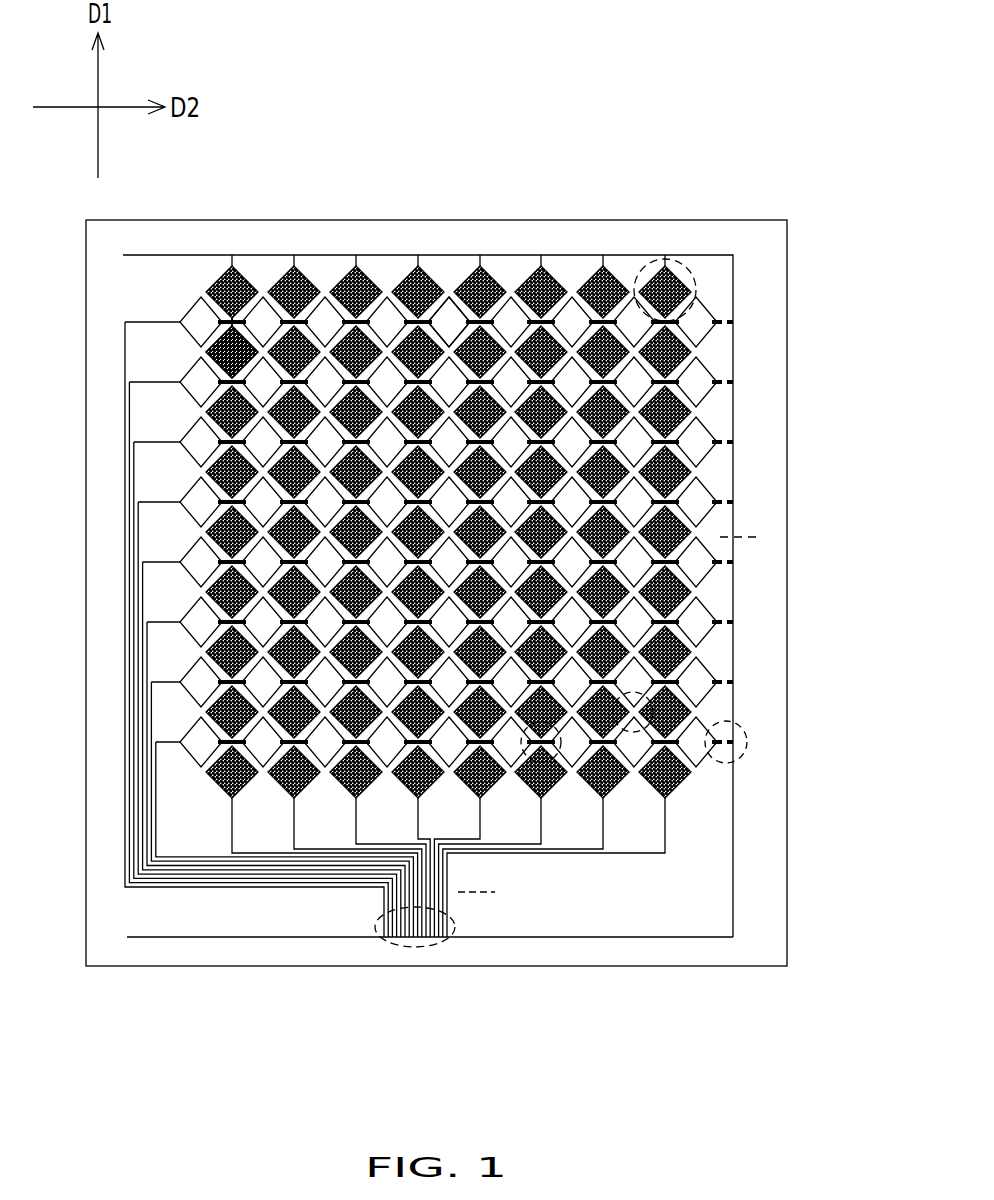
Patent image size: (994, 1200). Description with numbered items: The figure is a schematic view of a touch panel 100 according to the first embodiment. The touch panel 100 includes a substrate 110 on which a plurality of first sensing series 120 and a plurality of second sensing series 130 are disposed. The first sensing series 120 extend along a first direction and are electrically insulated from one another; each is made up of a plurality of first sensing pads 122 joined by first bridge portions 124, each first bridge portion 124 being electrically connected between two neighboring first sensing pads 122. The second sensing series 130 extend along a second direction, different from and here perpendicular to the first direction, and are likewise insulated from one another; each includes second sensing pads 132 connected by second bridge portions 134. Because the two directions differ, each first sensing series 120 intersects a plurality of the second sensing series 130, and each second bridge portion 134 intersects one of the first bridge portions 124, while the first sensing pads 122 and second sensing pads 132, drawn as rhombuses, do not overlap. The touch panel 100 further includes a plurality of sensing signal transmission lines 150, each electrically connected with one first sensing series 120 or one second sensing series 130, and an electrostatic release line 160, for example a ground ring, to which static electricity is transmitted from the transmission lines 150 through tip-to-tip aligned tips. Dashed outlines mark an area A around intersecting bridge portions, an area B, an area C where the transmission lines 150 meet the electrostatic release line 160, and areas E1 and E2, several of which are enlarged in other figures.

The touch panel 100 is at (473, 586).
The substrate 110 is at (777, 887).
The first sensing series 120 is at (446, 461).
The first sensing pad 122 is at (240, 350).
The first bridge portion 124 is at (234, 319).
The second sensing series 130 is at (456, 445).
The second sensing pad 132 is at (445, 320).
The second bridge portion 134 is at (473, 320).
The sensing signal transmission line 150 is at (218, 887).
The electrostatic release line 160 is at (617, 937).
The area A is at (553, 760).
The area B is at (653, 711).
The area C is at (453, 947).
The area E1 is at (682, 262).
The area E2 is at (745, 755).